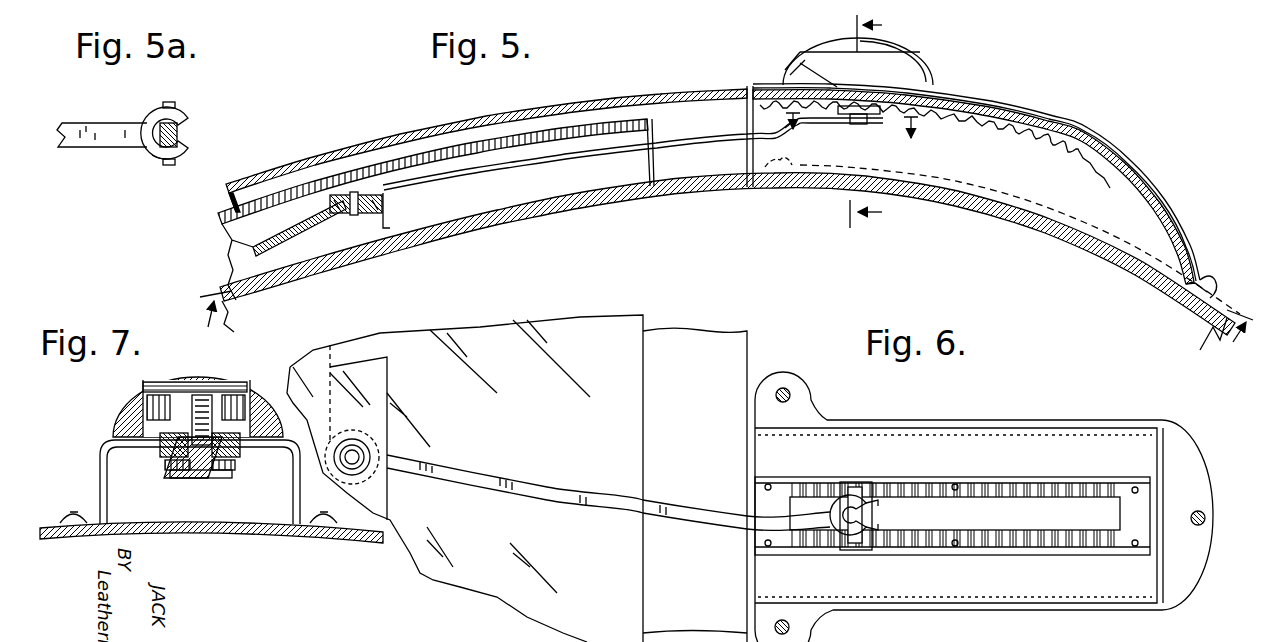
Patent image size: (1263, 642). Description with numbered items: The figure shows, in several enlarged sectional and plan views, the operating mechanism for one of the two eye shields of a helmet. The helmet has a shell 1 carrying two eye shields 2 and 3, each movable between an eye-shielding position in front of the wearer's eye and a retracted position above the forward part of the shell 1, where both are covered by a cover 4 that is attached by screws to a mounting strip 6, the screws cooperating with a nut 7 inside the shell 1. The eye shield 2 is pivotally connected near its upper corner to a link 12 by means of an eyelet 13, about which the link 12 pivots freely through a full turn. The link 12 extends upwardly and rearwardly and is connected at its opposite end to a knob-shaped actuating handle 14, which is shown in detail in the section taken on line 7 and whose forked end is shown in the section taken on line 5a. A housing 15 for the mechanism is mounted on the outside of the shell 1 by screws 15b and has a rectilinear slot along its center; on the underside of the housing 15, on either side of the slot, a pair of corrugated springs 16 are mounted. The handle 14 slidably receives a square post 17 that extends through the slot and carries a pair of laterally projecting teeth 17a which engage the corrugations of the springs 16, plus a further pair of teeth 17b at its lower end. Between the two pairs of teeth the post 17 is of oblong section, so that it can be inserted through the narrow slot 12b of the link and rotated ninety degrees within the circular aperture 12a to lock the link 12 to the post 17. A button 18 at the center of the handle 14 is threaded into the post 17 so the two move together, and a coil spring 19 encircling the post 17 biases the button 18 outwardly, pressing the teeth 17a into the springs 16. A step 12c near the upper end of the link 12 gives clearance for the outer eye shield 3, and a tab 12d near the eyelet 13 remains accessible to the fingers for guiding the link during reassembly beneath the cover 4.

In FIG. 5, the shell 1 is at (997, 216).
In FIG. 7, the shell 1 is at (190, 536).
In FIG. 5, the eye shield 2 is at (243, 238).
In FIG. 6, the eye shield 2 is at (363, 370).
In FIG. 5, the eye shield 3 is at (308, 176).
In FIG. 6, the eye shield 3 is at (433, 348).
In FIG. 5, the cover 4 is at (660, 90).
In FIG. 6, the cover 4 is at (690, 334).
In FIG. 5, the section line 5a- 5a is at (850, 130).
In FIG. 5, the mounting strip 6 is at (726, 326).
In FIG. 5, the nut 7 is at (874, 122).
In FIG. 5, the link 12 is at (417, 166).
In FIG. 5A, the link 12 is at (105, 128).
In FIG. 7, the link 12 is at (182, 478).
In FIG. 6, the link 12 is at (545, 486).
In FIG. 5A, the circular aperture 12a is at (158, 156).
In FIG. 6, the circular aperture 12a is at (873, 507).
In FIG. 5A, the slot 12b is at (185, 144).
In FIG. 6, the slot 12b is at (870, 521).
In FIG. 5, the step 12c is at (801, 128).
In FIG. 6, the tab 12d is at (331, 379).
In FIG. 5, the eyelet 13 is at (353, 191).
In FIG. 5, the actuating handle 14 is at (925, 74).
In FIG. 7, the actuating handle 14 is at (126, 416).
In FIG. 5, the housing 15 is at (1143, 178).
In FIG. 7, the housing 15 is at (100, 470).
In FIG. 6, the housing 15 is at (1097, 437).
In FIG. 7, the screws 15b is at (66, 521).
In FIG. 6, the screws 15b is at (784, 388).
In FIG. 5, the corrugated springs 16 is at (1030, 135).
In FIG. 7, the corrugated springs 16 is at (160, 447).
In FIG. 6, the corrugated springs 16 is at (1013, 543).
In FIG. 5A, the post 17 is at (180, 132).
In FIG. 7, the post 17 is at (222, 400).
In FIG. 5, the teeth 17a is at (800, 62).
In FIG. 7, the teeth 17a is at (165, 465).
In FIG. 6, the teeth 17a is at (862, 490).
In FIG. 5, the teeth 17b is at (858, 126).
In FIG. 5A, the teeth 17b is at (172, 108).
In FIG. 7, the teeth 17b is at (215, 480).
In FIG. 6, the teeth 17b is at (853, 487).
In FIG. 5, the button 18 is at (845, 45).
In FIG. 7, the button 18 is at (200, 380).
In FIG. 7, the coil spring 19 is at (166, 395).